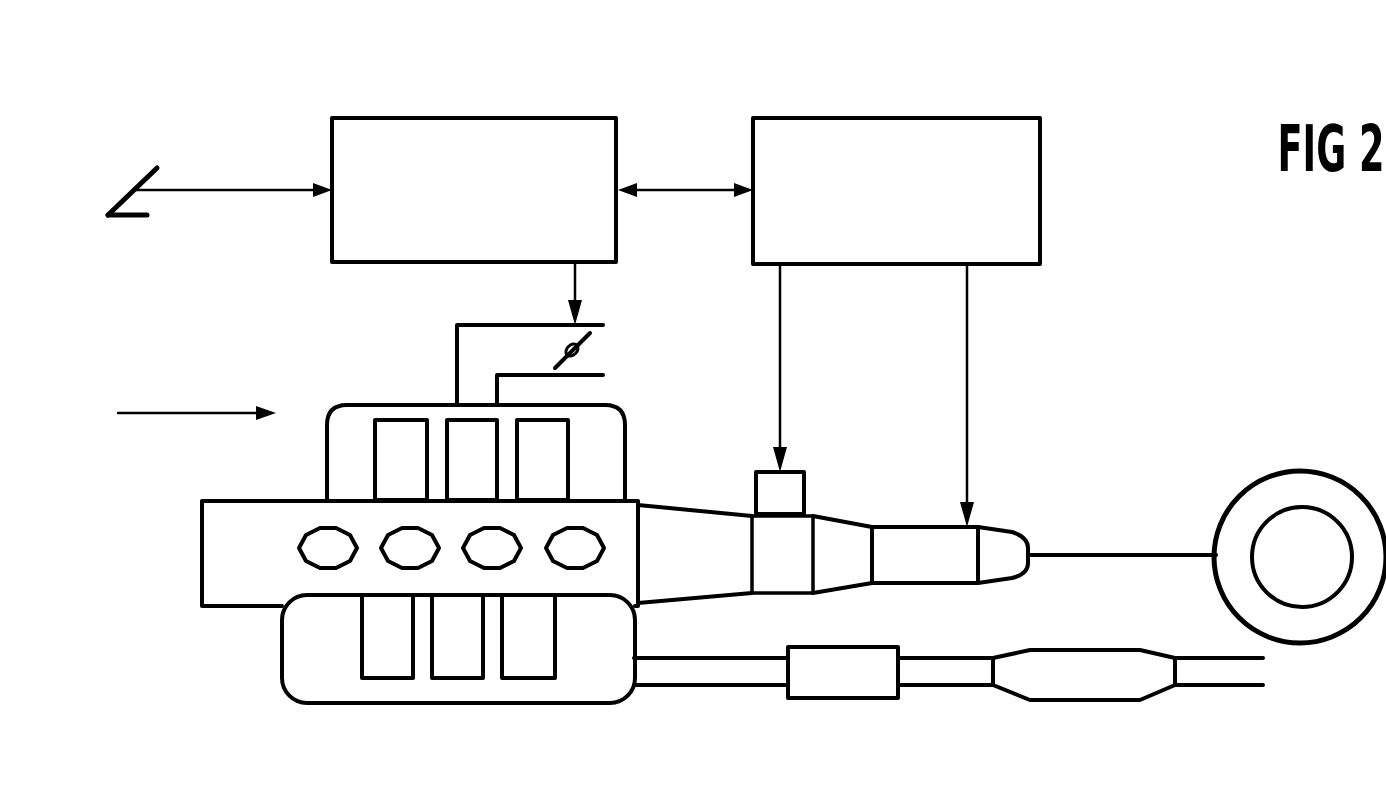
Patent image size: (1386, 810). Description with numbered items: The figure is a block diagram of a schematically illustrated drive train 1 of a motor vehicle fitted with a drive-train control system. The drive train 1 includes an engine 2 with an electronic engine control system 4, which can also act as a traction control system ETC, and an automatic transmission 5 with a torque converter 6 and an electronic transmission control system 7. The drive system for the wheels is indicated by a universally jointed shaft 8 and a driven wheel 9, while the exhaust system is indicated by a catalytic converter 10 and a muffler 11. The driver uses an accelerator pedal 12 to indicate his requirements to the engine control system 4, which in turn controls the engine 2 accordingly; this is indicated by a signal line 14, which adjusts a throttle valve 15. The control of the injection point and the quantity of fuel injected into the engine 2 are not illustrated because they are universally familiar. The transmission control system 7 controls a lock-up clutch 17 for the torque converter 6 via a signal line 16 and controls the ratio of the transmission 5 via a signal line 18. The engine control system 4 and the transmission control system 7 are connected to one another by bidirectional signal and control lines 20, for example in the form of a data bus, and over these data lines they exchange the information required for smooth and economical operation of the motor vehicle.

The drive train 1 is at (188, 414).
The engine 2 is at (202, 557).
The electronic engine control system 4 is at (466, 118).
The automatic transmission 5 is at (912, 527).
The torque converter 6 is at (785, 594).
The electronic transmission control system 7 is at (906, 118).
The universally jointed shaft 8 is at (1100, 555).
The driven wheel 9 is at (1302, 470).
The catalytic converter 10 is at (843, 700).
The muffler 11 is at (1084, 700).
The accelerator pedal 12 is at (125, 196).
The signal line 14 is at (576, 283).
The throttle valve 15 is at (584, 350).
The signal line 16 is at (781, 350).
The lock-up clutch 17 is at (806, 492).
The signal line 18 is at (968, 350).
The bidirectional signal and control lines 20 is at (680, 190).